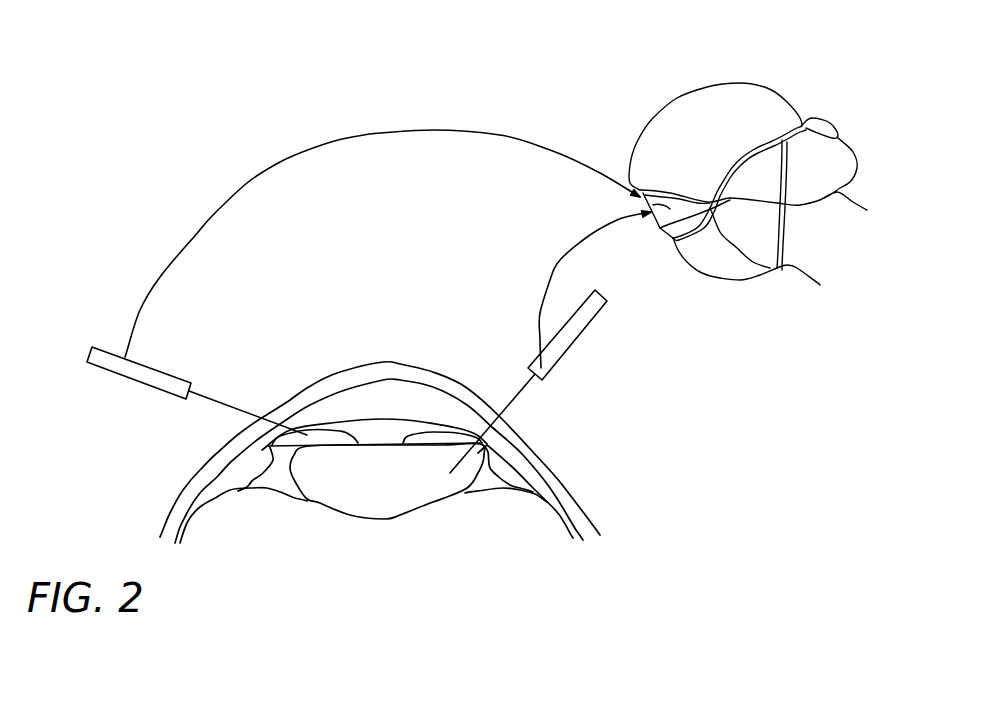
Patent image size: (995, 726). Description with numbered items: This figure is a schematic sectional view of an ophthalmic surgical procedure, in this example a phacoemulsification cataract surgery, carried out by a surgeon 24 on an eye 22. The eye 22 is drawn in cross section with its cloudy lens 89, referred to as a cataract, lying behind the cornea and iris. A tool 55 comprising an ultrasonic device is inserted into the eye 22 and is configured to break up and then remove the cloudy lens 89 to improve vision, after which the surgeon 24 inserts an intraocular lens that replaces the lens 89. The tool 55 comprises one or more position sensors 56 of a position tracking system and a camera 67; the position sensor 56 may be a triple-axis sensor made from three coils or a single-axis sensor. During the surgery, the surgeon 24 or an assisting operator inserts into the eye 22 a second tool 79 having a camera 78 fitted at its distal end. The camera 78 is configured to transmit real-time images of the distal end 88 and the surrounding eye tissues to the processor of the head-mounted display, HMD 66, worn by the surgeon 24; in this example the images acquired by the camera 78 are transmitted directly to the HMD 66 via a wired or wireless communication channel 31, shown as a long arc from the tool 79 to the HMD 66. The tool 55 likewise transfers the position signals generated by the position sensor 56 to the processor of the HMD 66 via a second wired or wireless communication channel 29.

The eye 22 is at (101, 467).
The surgeon 24 is at (780, 87).
The channel 29 is at (597, 226).
The channel 31 is at (505, 135).
The tool 55 is at (600, 347).
The position sensor 56 is at (490, 440).
The HMD 66 is at (678, 197).
The camera 67 is at (470, 433).
The camera 78 is at (305, 437).
The tool 79 is at (143, 383).
The distal end 88 is at (479, 461).
The lens 89 is at (402, 490).